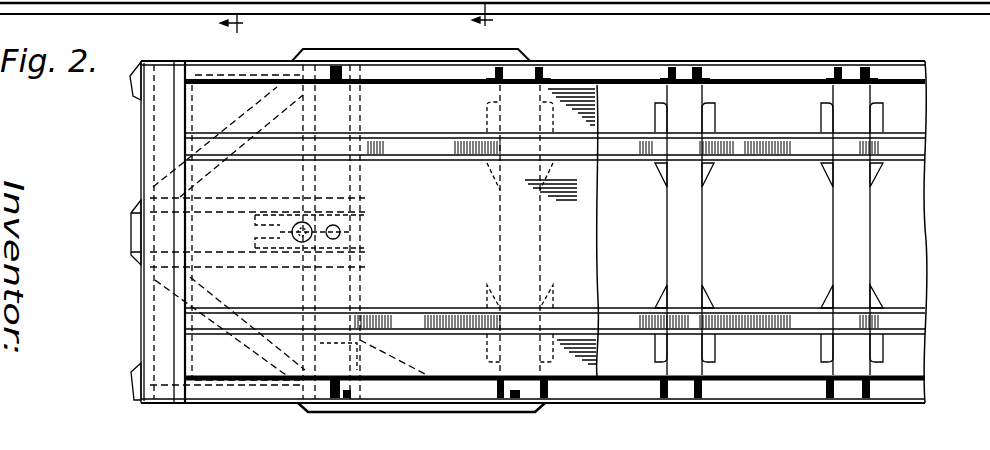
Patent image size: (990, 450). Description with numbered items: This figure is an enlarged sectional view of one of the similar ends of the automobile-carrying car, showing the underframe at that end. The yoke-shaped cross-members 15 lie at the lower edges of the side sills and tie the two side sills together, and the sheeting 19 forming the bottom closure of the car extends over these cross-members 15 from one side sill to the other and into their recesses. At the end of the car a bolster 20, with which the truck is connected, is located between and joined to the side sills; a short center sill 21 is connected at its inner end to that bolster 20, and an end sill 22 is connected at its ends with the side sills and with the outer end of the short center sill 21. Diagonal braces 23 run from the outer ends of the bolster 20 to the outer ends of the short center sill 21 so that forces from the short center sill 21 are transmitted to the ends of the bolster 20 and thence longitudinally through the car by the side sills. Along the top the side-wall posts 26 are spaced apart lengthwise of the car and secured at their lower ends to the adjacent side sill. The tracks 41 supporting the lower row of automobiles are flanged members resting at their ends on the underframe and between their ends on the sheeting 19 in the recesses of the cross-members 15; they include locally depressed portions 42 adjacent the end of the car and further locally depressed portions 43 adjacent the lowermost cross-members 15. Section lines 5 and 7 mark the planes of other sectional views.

The section line 5 is at (231, 31).
The section line 7 is at (482, 22).
The cross-members 15 is at (693, 243).
The sheeting 19 is at (610, 233).
The bolsters 20 is at (368, 183).
The short center sills 21 is at (233, 207).
The end sills 22 is at (146, 167).
The diagonal braces 23 is at (245, 118).
The posts 26 is at (672, 67).
The tracks 41 is at (480, 150).
The locally depressed portions 42 is at (448, 322).
The locally depressed portions 43 is at (757, 147).